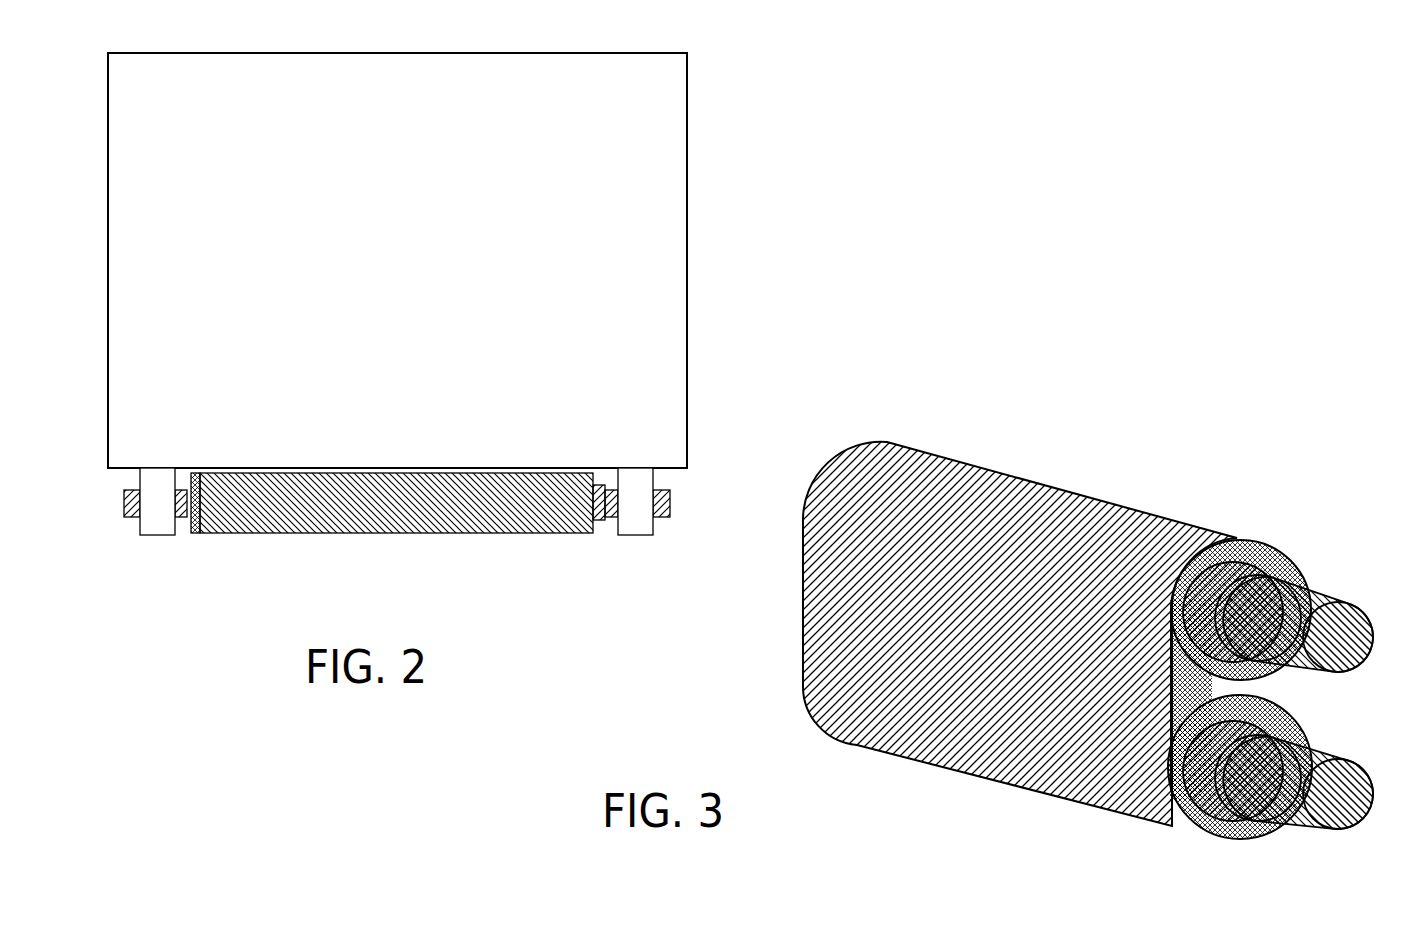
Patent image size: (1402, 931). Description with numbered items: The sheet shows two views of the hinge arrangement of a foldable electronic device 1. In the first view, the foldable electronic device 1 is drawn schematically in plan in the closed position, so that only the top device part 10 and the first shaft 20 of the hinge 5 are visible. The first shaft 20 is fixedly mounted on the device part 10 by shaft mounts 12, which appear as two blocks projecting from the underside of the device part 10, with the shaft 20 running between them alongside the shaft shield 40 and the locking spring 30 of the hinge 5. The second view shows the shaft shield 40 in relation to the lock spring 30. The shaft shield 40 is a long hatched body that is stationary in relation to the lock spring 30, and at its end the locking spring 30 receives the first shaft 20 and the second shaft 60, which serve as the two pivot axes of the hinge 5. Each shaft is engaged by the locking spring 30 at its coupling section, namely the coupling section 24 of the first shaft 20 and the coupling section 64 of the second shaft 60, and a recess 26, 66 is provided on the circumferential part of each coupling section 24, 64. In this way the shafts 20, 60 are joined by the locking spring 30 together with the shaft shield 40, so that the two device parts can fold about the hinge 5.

In FIG. 2, the foldable electronic device 1 is at (430, 324).
In FIG. 2, the device part 10 is at (108, 355).
In FIG. 2, the shaft mounts 12 is at (149, 477).
In FIG. 2, the hinge 5 is at (404, 534).
In FIG. 3, the hinge 5 is at (1101, 682).
In FIG. 2, the first shaft 20 is at (122, 506).
In FIG. 3, the first shaft 20 is at (1370, 625).
In FIG. 2, the locking spring 30 is at (197, 533).
In FIG. 3, the locking spring 30 is at (1100, 790).
In FIG. 2, the shaft shield 40 is at (380, 522).
In FIG. 3, the shaft shield 40 is at (980, 762).
In FIG. 3, the coupling section 24 is at (1262, 540).
In FIG. 3, the recess 26 is at (1180, 577).
In FIG. 3, the second shaft 60 is at (1320, 757).
In FIG. 3, the coupling section 64 is at (1262, 842).
In FIG. 3, the recess 66 is at (1167, 820).